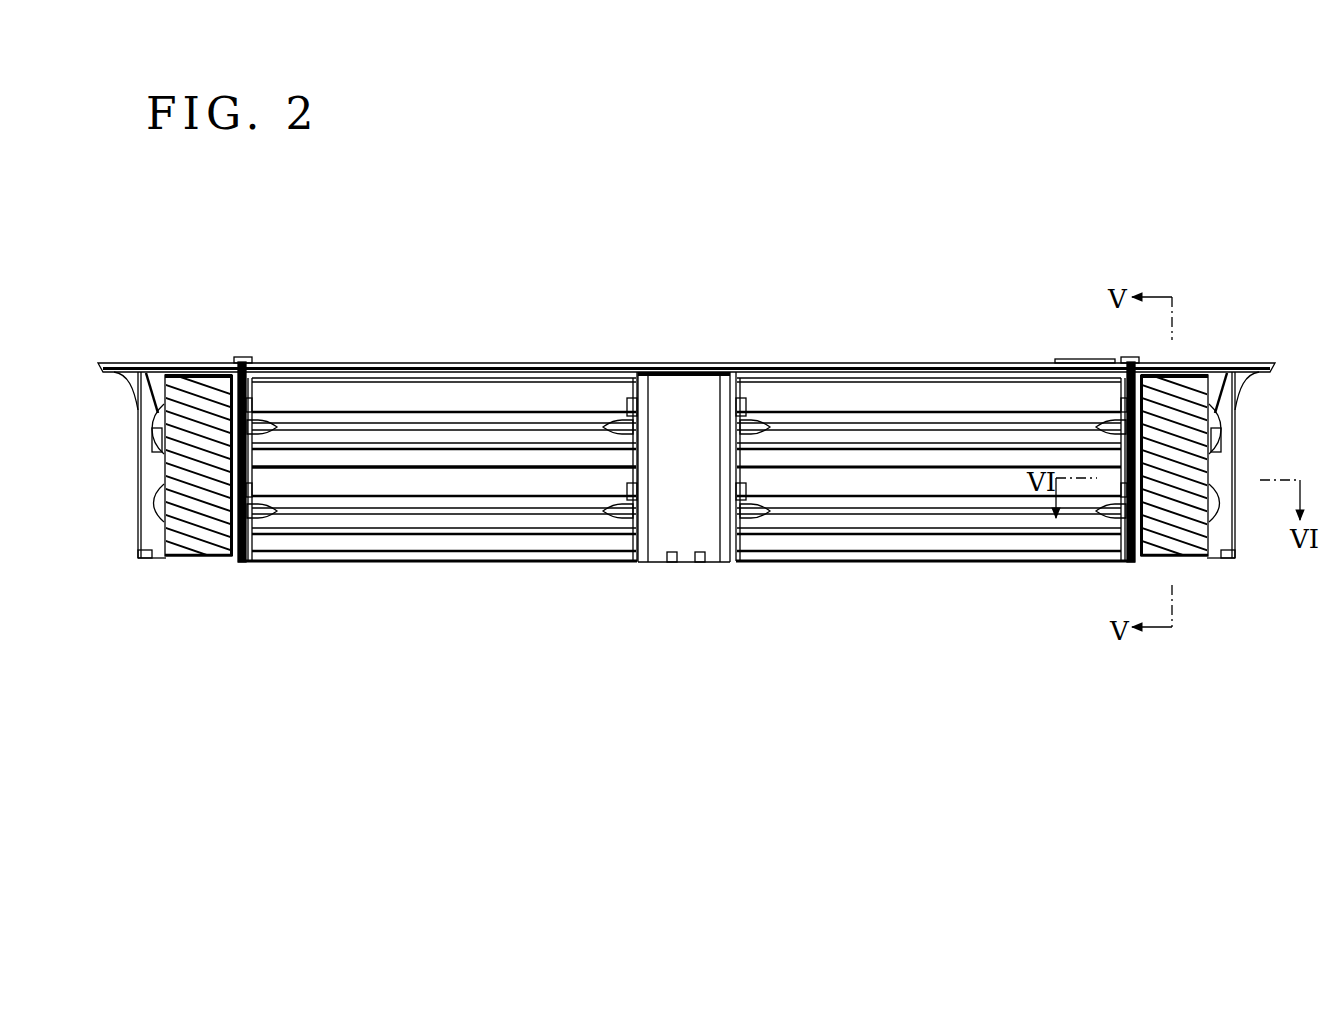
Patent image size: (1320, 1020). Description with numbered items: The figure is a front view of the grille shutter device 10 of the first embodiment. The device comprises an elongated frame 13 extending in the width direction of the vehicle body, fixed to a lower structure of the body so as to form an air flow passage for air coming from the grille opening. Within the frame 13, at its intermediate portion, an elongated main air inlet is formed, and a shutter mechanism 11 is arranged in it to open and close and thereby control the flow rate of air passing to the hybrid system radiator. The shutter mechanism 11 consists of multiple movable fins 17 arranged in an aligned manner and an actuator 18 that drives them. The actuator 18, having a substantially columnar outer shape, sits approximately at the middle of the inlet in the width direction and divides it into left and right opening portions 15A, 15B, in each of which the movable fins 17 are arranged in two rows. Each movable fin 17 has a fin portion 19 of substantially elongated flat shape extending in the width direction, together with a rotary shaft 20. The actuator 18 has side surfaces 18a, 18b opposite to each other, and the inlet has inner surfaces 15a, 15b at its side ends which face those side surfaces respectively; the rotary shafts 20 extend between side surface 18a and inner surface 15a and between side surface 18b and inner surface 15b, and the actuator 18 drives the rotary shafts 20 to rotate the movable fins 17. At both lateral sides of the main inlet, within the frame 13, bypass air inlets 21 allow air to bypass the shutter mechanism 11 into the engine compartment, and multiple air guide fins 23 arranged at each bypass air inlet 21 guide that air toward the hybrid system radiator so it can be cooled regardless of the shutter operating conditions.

The grille shutter device 10 is at (238, 240).
The shutter mechanism 11 is at (576, 482).
The frame 13 is at (1273, 364).
The opening portion 15A is at (802, 388).
The opening portion 15B is at (528, 388).
The inner surface 15a is at (1116, 560).
The inner surface 15b is at (257, 560).
The movable fin 17 is at (482, 312).
The actuator 18 is at (688, 402).
The side surface 18a is at (738, 553).
The side surface 18b is at (632, 553).
The fin portion 19 is at (394, 390).
The rotary shaft 20 is at (450, 397).
The bypass air inlet 21 is at (214, 478).
The air guide fin 23 is at (160, 505).